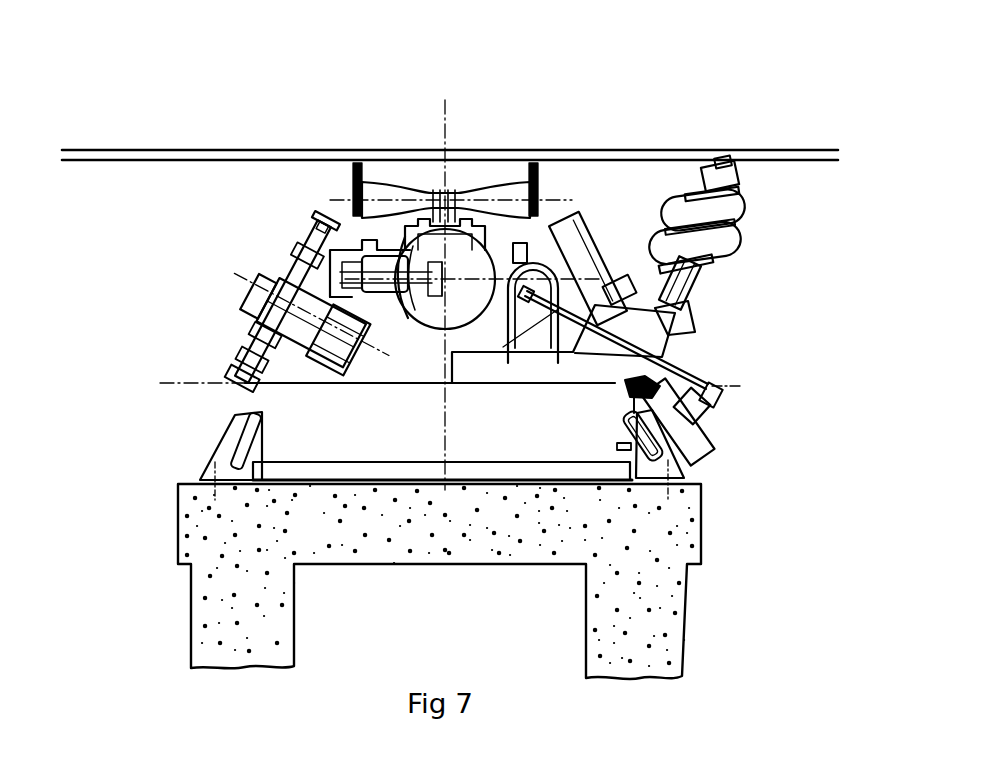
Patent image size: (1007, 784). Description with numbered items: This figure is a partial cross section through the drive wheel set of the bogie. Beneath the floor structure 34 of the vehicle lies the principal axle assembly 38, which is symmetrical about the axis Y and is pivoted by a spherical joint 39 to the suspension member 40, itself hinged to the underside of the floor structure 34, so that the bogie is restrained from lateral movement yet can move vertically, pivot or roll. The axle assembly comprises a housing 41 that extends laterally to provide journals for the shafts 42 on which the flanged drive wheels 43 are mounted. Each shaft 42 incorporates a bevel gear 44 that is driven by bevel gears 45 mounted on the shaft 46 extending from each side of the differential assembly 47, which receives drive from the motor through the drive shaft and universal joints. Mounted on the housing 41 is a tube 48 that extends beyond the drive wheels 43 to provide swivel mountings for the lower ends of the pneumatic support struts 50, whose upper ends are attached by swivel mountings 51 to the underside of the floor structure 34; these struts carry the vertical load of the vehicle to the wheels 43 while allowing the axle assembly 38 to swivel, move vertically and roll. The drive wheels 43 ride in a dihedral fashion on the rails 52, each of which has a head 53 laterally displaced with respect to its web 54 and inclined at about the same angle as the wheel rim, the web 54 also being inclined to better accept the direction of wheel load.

The floor structure 34 is at (748, 152).
The principal axle assembly 38 is at (467, 297).
The spherical joint 39 is at (424, 192).
The suspension member 40 is at (488, 188).
The housing 41 is at (412, 300).
The shafts 42 is at (278, 283).
The flanged drive wheels 43 is at (308, 240).
The bevel gear 44 is at (323, 358).
The bevel gears 45 is at (341, 244).
The shaft 46 is at (386, 292).
The differential assembly 47 is at (436, 224).
The tube 48 is at (690, 320).
The pneumatic support struts 50 is at (742, 262).
The swivel mountings 51 is at (754, 186).
The rails 52 is at (243, 396).
The head 53 is at (686, 368).
The web 54 is at (628, 414).
The axis Y is at (444, 118).